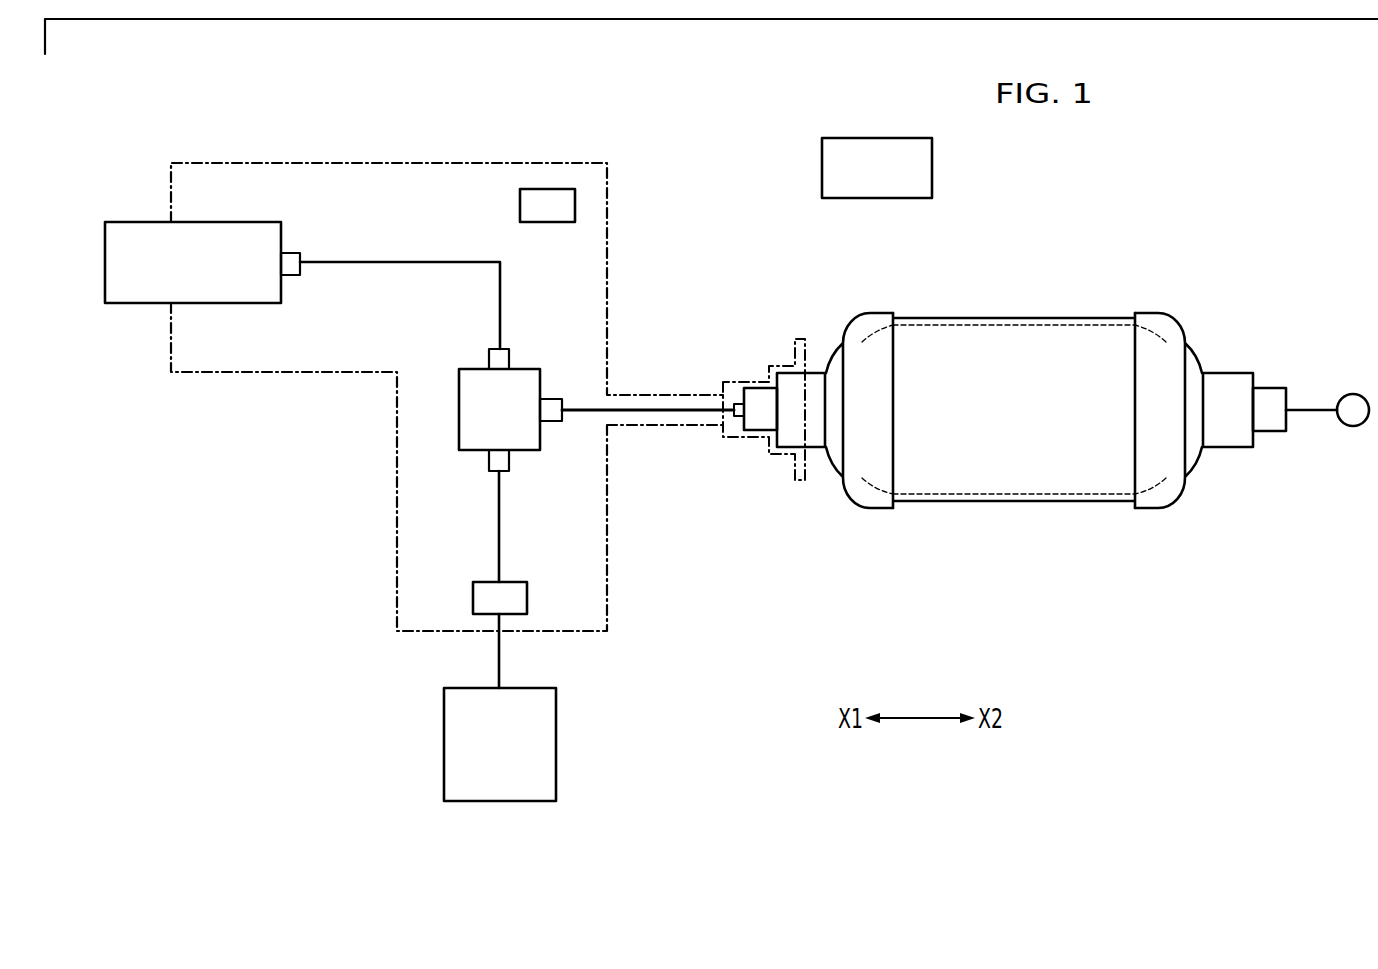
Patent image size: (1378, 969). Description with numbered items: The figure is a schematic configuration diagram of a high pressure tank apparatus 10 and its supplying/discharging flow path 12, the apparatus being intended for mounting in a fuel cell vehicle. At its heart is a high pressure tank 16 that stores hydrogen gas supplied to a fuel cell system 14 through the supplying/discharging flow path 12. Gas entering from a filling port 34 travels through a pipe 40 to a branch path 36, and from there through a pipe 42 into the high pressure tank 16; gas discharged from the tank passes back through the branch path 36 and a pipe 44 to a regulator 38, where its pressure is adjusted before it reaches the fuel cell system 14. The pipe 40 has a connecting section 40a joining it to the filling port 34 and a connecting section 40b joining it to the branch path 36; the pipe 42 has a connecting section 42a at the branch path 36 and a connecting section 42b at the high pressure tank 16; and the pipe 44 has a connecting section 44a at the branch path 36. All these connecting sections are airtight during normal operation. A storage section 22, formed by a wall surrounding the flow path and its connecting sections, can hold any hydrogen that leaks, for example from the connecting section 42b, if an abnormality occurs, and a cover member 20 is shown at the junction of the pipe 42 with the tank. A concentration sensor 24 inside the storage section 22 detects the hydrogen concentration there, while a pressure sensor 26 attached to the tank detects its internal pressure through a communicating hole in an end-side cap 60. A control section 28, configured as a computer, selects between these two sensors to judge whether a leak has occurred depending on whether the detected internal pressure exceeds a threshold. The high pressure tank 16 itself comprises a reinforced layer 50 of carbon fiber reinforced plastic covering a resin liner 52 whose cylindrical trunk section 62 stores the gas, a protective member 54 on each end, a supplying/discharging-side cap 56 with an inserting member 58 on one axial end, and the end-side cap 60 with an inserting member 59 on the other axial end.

The high pressure tank apparatus 10 is at (1149, 166).
The supplying/discharging flow path 12 is at (372, 250).
The fuel cell system 14 is at (548, 709).
The high pressure tank 16 is at (1014, 399).
The cover member 20 is at (792, 470).
The storage section 22 is at (607, 192).
The concentration sensor 24 is at (558, 223).
The pressure sensor 26 is at (1358, 394).
The control section 28 is at (904, 137).
The filling port 34 is at (137, 221).
The branch path 36 is at (458, 410).
The regulator 38 is at (474, 582).
The pipe 40 is at (362, 264).
The connecting section 40a is at (292, 252).
The connecting section 40b is at (488, 354).
The pipe 42 is at (693, 405).
The connecting section 42a is at (552, 399).
The connecting section 42b is at (740, 419).
The pipe 44 is at (502, 520).
The connecting section 44a is at (488, 467).
The reinforced layer 50 is at (940, 317).
The liner 52 is at (951, 482).
The protective member 54 is at (865, 312).
The supplying/discharging-side cap 56 is at (816, 372).
The inserting member 58 is at (755, 392).
The inserting member 59 is at (1270, 425).
The end-side cap 60 is at (1237, 371).
The trunk section 62 is at (1012, 495).